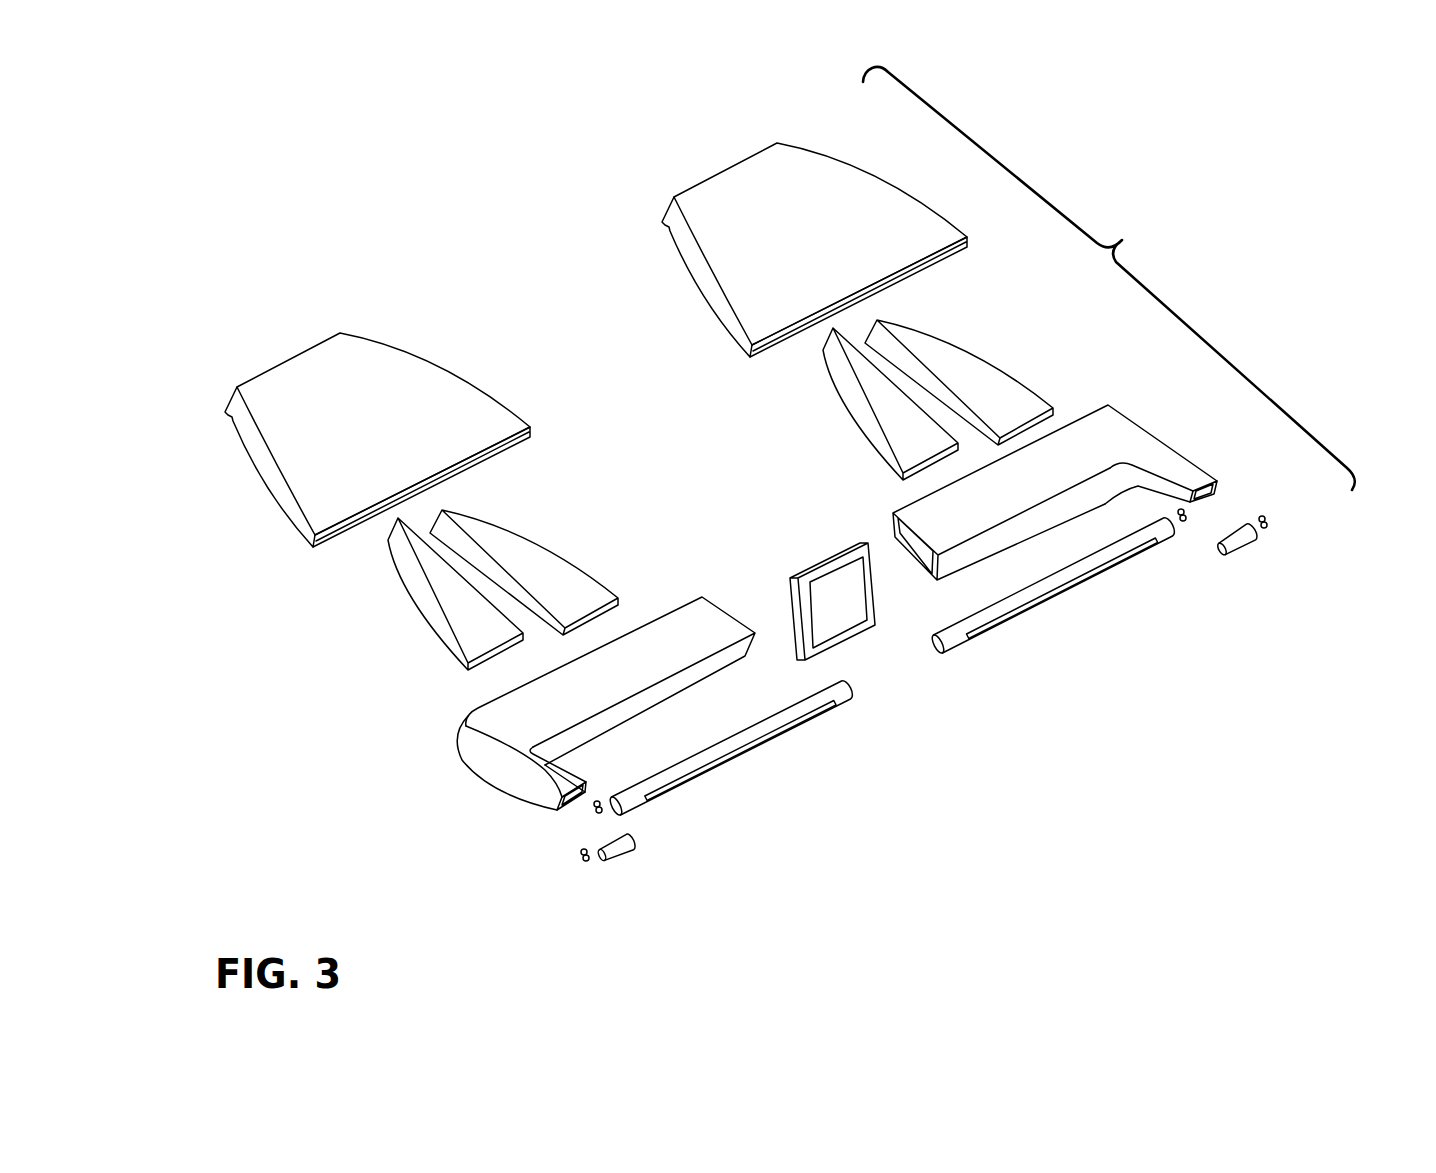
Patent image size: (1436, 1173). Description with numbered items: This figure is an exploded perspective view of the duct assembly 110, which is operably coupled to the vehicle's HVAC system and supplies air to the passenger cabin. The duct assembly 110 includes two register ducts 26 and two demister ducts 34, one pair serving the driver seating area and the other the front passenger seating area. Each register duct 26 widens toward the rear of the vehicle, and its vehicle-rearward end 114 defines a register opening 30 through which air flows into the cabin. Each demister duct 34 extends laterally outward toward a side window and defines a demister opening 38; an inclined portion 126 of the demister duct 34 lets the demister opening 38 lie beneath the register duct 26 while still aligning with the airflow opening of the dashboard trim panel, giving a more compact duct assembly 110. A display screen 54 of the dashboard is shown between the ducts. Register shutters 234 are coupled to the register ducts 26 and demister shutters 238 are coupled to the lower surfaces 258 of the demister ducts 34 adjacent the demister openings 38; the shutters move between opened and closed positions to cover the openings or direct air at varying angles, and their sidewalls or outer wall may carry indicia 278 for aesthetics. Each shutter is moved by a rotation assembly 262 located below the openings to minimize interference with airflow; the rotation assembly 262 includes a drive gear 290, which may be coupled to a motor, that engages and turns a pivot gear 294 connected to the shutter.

The register duct 26 is at (623, 379).
The register opening 30 is at (327, 545).
The demister duct 34 is at (814, 592).
The demister opening 38 is at (588, 790).
The display screen 54 is at (845, 625).
The duct assembly 110 is at (1109, 278).
The vehicle-rearward end 114 is at (321, 512).
The inclined portion 126 is at (818, 592).
The register shutter 234 is at (843, 700).
The demister shutter 238 is at (982, 714).
The lower surface 258 is at (663, 699).
The rotation assembly 262 is at (1283, 540).
The indicia 278 is at (891, 670).
The drive gear 290 is at (594, 807).
The pivot gear 294 is at (597, 812).